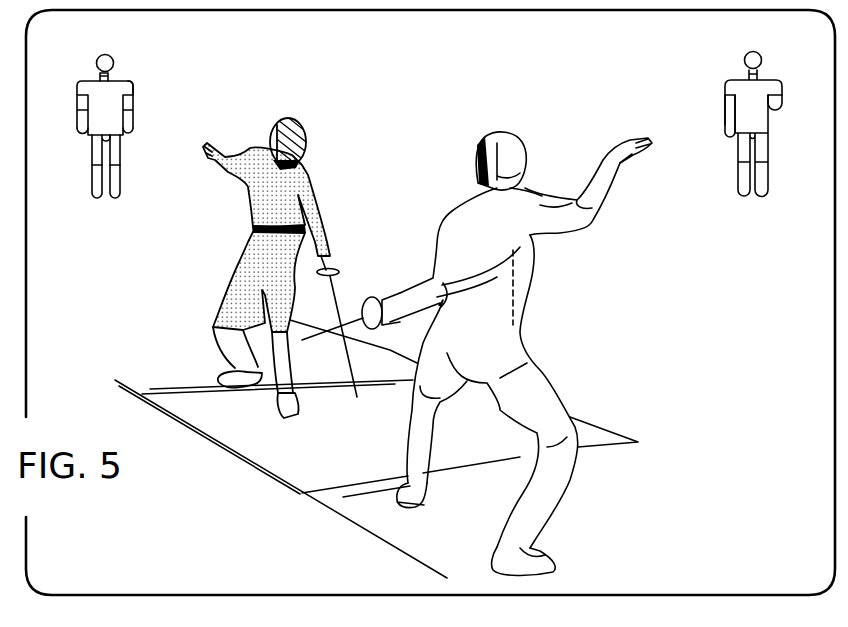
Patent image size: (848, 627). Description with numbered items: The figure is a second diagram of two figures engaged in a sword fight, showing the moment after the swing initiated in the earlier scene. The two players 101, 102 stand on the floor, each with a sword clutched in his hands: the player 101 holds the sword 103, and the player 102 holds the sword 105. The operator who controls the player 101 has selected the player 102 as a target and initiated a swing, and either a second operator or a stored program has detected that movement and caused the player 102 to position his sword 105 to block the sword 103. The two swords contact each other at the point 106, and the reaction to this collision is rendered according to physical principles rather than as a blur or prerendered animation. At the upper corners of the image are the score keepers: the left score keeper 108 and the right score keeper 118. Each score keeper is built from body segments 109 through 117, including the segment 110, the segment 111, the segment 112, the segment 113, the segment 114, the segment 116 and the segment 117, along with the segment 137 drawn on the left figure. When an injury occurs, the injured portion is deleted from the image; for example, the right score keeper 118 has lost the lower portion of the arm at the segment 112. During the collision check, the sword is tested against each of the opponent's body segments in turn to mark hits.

The player 101 is at (552, 383).
The player 102 is at (225, 290).
The sword 103 is at (349, 367).
The sword 105 is at (336, 289).
The contact point 106 is at (336, 320).
The left score keeper 108 is at (113, 60).
The segment 109 is at (76, 110).
The segment 110 is at (84, 80).
The segment 111 is at (134, 89).
The segment 112 is at (130, 111).
The segment 113 is at (122, 167).
The segment 114 is at (122, 136).
The segment 116 is at (90, 165).
The segment 117 is at (116, 80).
The right score keeper 118 is at (746, 60).
The left upper leg indicator 137 is at (91, 135).